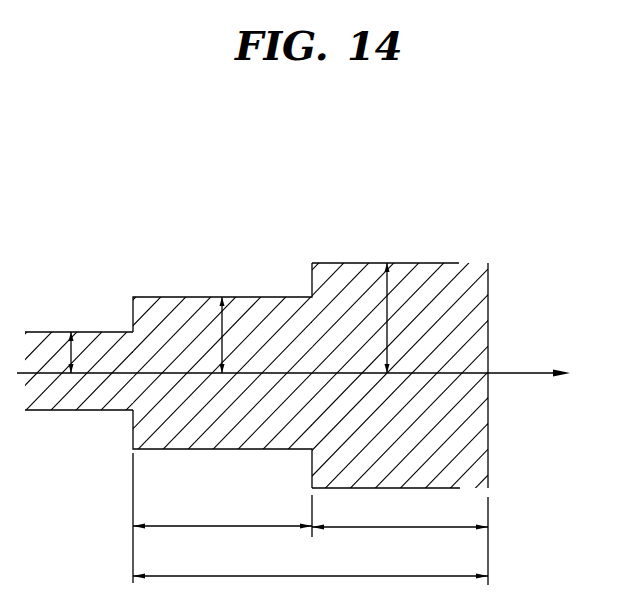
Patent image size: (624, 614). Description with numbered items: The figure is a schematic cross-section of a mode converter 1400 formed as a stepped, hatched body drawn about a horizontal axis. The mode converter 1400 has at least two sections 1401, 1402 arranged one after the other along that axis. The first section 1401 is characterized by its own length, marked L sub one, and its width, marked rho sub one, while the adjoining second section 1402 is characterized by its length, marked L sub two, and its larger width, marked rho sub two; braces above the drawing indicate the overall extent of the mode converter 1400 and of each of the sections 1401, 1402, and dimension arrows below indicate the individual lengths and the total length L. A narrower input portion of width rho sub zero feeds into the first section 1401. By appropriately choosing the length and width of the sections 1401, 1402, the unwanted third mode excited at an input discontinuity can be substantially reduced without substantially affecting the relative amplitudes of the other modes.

The mode converter 1400 is at (490, 154).
The first section 1401 is at (312, 255).
The second section 1402 is at (462, 221).